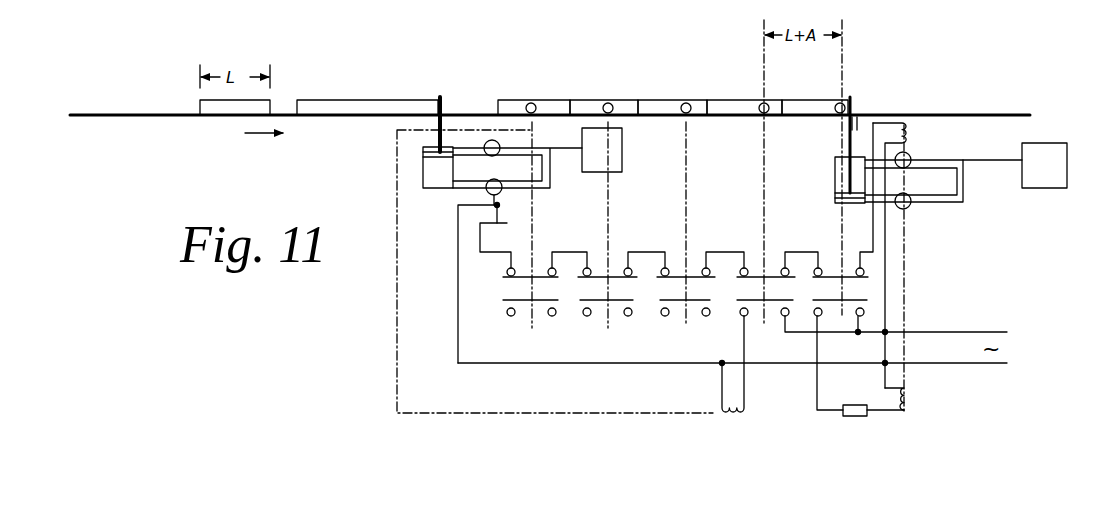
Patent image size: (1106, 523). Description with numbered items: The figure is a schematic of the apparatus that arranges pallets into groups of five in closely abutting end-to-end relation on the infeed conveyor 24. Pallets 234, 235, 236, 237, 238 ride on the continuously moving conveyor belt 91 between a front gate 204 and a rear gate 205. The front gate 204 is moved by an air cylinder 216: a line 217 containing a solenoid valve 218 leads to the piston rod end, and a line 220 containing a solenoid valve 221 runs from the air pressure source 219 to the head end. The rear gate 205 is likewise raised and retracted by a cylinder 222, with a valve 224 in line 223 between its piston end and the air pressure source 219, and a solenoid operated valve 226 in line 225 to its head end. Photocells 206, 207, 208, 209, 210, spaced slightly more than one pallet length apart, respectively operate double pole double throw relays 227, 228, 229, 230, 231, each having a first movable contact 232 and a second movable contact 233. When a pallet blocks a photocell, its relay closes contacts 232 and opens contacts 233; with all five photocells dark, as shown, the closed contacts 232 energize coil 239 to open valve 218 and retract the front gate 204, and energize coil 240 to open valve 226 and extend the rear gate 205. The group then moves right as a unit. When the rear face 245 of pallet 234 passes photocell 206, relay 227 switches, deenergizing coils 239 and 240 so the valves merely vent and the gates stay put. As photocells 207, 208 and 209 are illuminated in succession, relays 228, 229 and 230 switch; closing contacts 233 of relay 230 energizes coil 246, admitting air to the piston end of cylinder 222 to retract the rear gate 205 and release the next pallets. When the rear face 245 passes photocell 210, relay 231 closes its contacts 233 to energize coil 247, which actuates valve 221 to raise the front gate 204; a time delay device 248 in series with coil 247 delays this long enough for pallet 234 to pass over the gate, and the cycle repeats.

The infeed conveyor 24 is at (137, 131).
The conveyor belt 91 is at (130, 115).
The front gate 204 is at (860, 118).
The rear gate 205 is at (440, 97).
The photocell 206 is at (532, 100).
The photocell 207 is at (610, 100).
The photocell 208 is at (688, 100).
The photocell 209 is at (769, 100).
The photocell 210 is at (852, 98).
The air cylinder 216 is at (835, 189).
The line 217 is at (945, 158).
The solenoid valve 218 is at (909, 167).
The air pressure source 219 is at (608, 172).
The line 220 is at (949, 204).
The solenoid valve 221 is at (909, 209).
The cylinder 222 is at (444, 186).
The line 223 is at (497, 143).
The valve 224 is at (500, 153).
The line 225 is at (546, 186).
The solenoid operated valve 226 is at (502, 194).
The double pole double throw relay 227 is at (513, 288).
The double pole double throw relay 228 is at (586, 288).
The double pole double throw relay 229 is at (661, 288).
The double pole double throw relay 230 is at (739, 288).
The double pole double throw relay 231 is at (821, 288).
The first movable contact 232 is at (546, 267).
The second movable contact 233 is at (512, 316).
The pallet 234 is at (503, 100).
The pallet 235 is at (586, 100).
The pallet 236 is at (664, 100).
The pallet 237 is at (742, 100).
The pallet 238 is at (800, 100).
The coil 239 is at (906, 128).
The coil 240 is at (505, 229).
The rear face 245 is at (497, 107).
The coil 246 is at (729, 420).
The coil 247 is at (910, 400).
The time delay device 248 is at (856, 418).